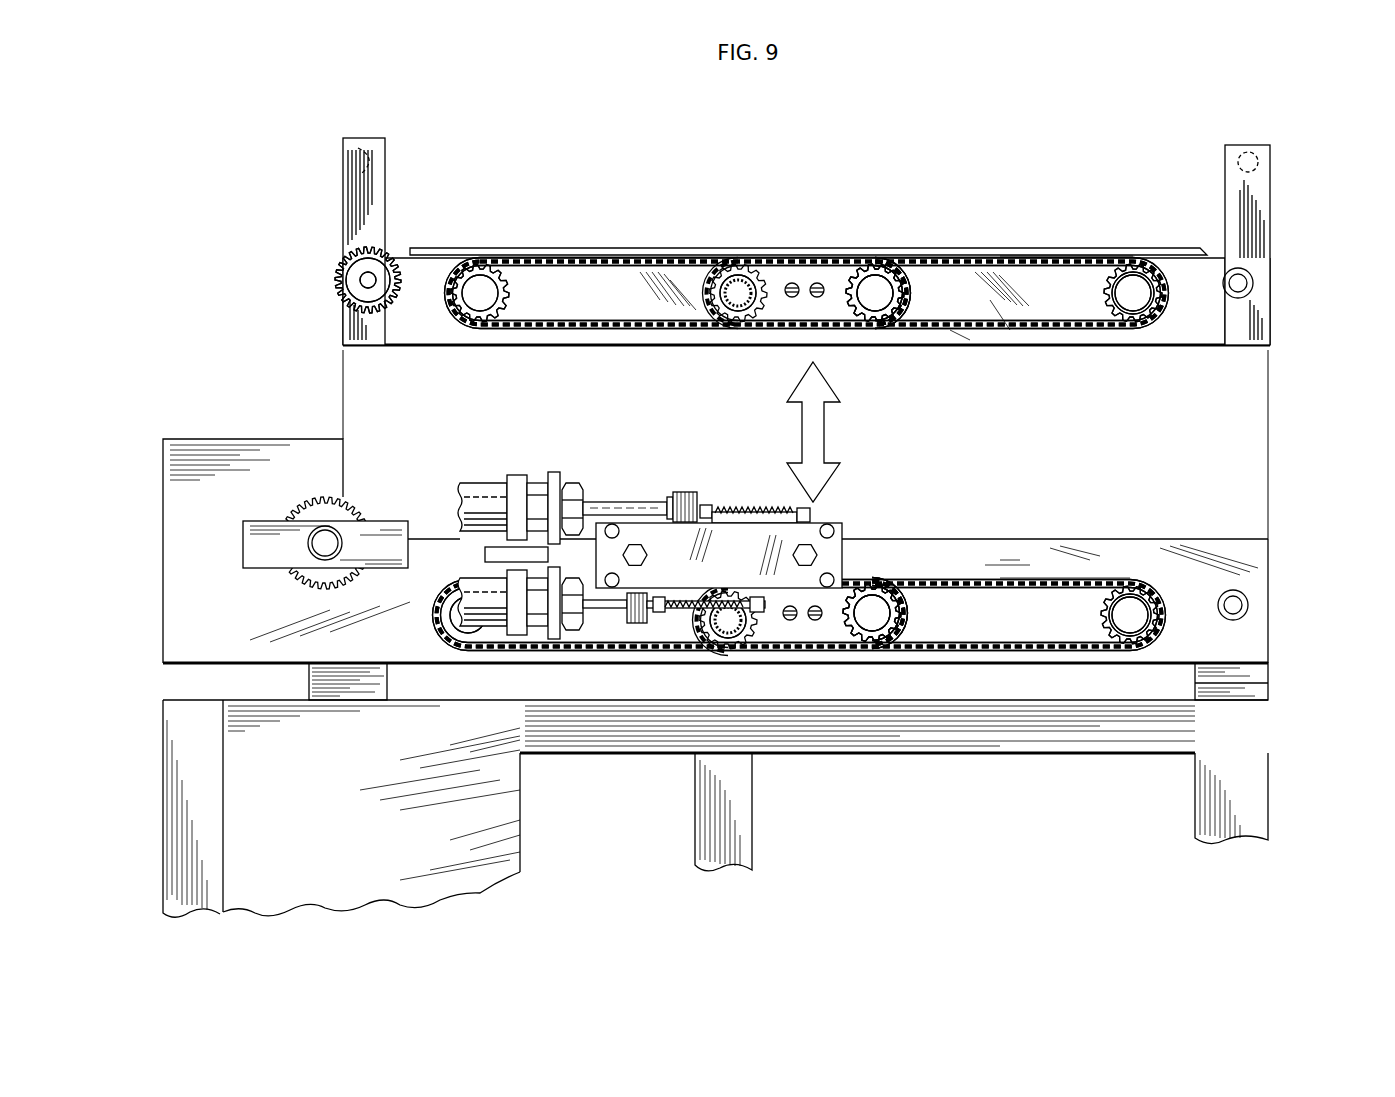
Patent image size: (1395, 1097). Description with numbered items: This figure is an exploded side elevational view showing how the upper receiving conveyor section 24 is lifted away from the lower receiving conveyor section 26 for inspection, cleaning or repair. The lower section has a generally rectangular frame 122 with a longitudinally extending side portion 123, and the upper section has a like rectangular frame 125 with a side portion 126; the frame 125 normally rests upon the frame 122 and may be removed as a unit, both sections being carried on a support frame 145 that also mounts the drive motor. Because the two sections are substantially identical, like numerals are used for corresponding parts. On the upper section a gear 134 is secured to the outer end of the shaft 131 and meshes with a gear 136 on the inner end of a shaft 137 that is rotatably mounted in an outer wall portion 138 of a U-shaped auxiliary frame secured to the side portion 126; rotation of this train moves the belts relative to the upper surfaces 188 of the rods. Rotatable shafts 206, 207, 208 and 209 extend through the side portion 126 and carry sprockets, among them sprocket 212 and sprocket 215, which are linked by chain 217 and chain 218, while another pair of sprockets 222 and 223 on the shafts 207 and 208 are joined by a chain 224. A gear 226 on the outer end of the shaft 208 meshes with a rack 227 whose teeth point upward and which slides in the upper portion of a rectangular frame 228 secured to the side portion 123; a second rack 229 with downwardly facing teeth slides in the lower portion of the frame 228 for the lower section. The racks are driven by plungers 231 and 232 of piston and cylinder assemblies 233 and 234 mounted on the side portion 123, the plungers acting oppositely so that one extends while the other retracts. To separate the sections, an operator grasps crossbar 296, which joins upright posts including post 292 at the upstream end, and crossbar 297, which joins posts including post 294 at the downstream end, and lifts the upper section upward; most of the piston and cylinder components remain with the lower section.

The upper receiving conveyor section 24 is at (1276, 300).
The lower receiving conveyor section 26 is at (1270, 600).
The frame 122 is at (1197, 538).
The side portion 123 is at (1043, 570).
The frame 125 is at (805, 444).
The side portion 126 is at (1053, 303).
The shaft 131 is at (360, 280).
The gear 134 is at (340, 302).
The gear 136 is at (350, 500).
The shaft 137 is at (325, 552).
The outer wall portion 138 is at (243, 545).
The support frame 145 is at (1272, 746).
The upper surfaces 188 is at (1010, 250).
The rotatable shaft 206 is at (1145, 290).
The rotatable shaft 207 is at (880, 286).
The rotatable shaft 208 is at (720, 283).
The rotatable shaft 209 is at (478, 276).
The sprocket 212 is at (1166, 308).
The sprocket 215 is at (498, 283).
The chain 217 is at (1030, 268).
The chain 218 is at (605, 260).
The sprocket 222 is at (896, 312).
The sprocket 223 is at (790, 262).
The chain 224 is at (852, 262).
The gear 226 is at (750, 272).
The rack 227 is at (738, 508).
The rectangular frame 228 is at (716, 566).
The rack 229 is at (690, 604).
The plunger 231 is at (600, 502).
The plunger 232 is at (600, 612).
The piston and cylinder assembly 233 is at (478, 478).
The piston and cylinder assembly 234 is at (486, 578).
The upright post 292 is at (1262, 185).
The upright post 294 is at (343, 200).
The crossbar 296 is at (1248, 150).
The crossbar 297 is at (371, 147).